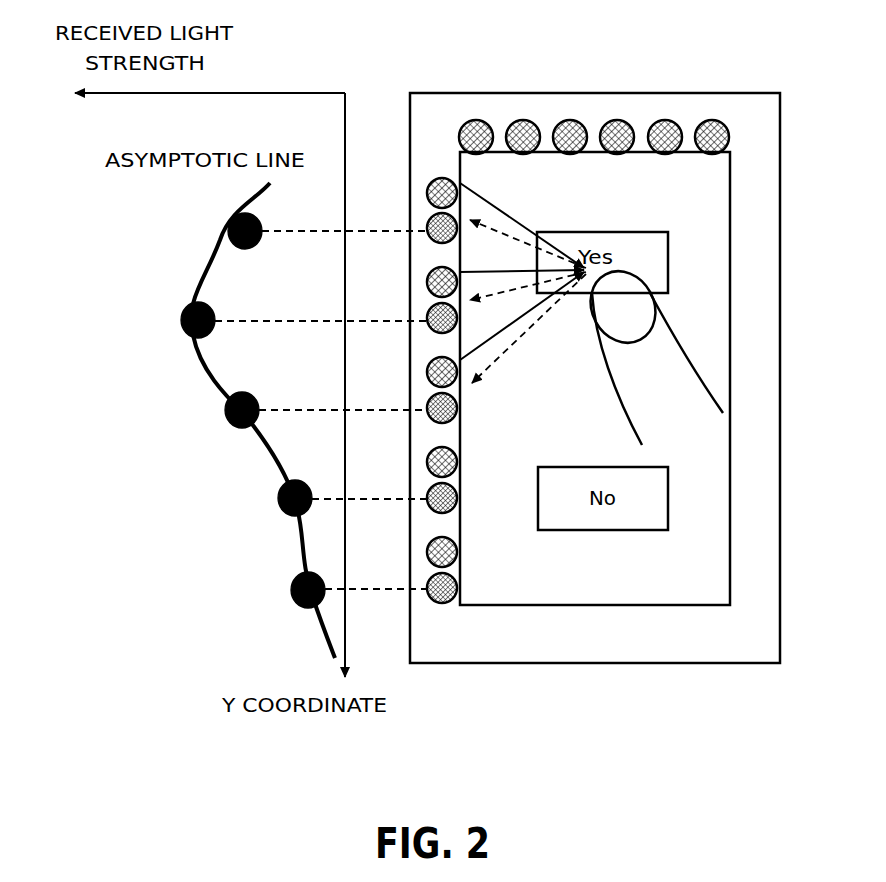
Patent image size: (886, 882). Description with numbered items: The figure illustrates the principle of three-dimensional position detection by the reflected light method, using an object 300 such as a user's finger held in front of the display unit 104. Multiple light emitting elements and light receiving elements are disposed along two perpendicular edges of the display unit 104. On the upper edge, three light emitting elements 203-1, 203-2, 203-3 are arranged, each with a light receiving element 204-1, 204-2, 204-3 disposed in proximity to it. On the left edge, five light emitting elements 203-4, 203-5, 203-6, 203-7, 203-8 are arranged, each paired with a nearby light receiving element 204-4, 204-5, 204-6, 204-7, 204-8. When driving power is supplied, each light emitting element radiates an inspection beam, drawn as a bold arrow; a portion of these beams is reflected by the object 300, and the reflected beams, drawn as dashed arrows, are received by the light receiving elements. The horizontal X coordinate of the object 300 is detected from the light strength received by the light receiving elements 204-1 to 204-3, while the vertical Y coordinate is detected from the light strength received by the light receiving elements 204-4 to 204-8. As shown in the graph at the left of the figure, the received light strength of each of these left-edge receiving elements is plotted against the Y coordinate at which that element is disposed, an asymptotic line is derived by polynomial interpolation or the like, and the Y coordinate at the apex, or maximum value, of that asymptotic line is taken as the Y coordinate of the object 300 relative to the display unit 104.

The light emitting element 203-1 is at (470, 123).
The light emitting element 203-2 is at (570, 121).
The light emitting element 203-3 is at (667, 121).
The light emitting element 203-4 is at (428, 188).
The light emitting element 203-5 is at (428, 278).
The light emitting element 203-6 is at (428, 368).
The light emitting element 203-7 is at (428, 457).
The light emitting element 203-8 is at (428, 547).
The light receiving element 204-1 is at (518, 122).
The light receiving element 204-2 is at (617, 121).
The light receiving element 204-3 is at (712, 121).
The light receiving element 204-4 is at (428, 225).
The light receiving element 204-5 is at (428, 315).
The light receiving element 204-6 is at (428, 404).
The light receiving element 204-7 is at (428, 493).
The light receiving element 204-8 is at (428, 584).
The object 300 is at (683, 340).
The display unit 104 is at (680, 606).